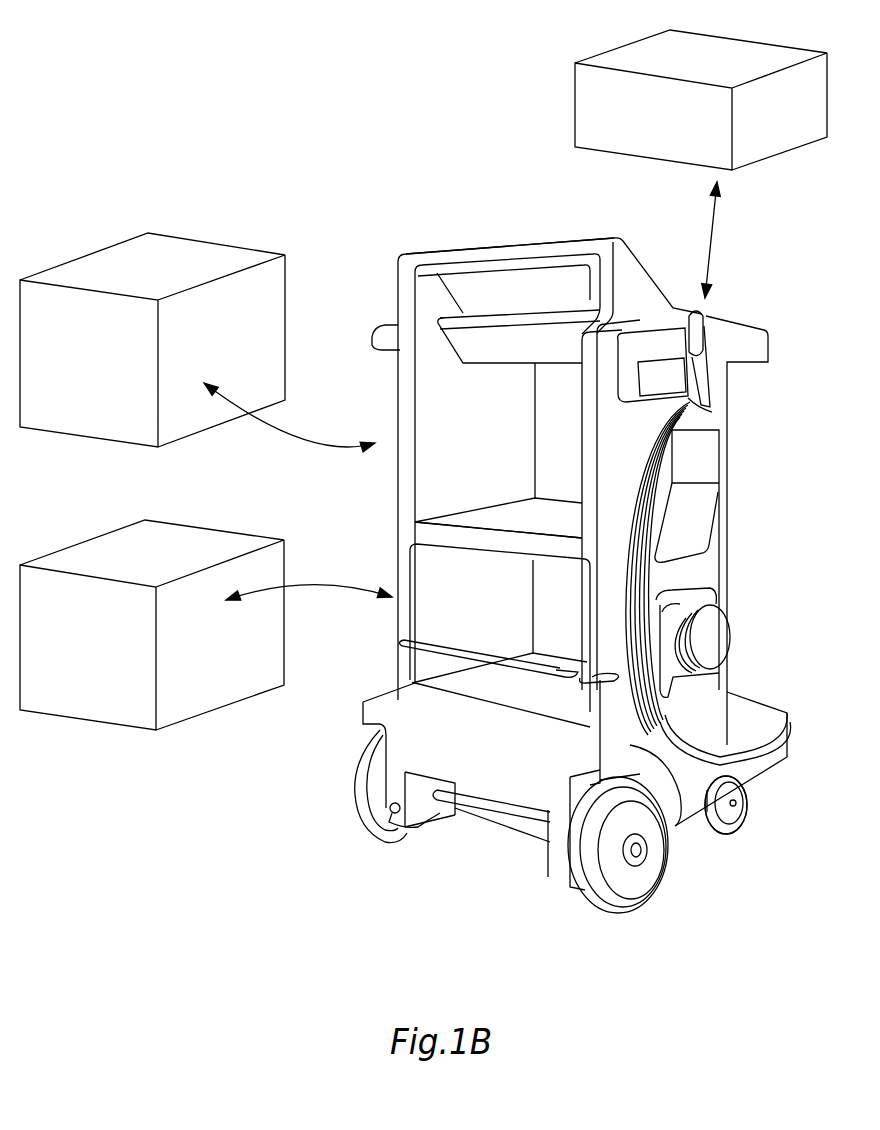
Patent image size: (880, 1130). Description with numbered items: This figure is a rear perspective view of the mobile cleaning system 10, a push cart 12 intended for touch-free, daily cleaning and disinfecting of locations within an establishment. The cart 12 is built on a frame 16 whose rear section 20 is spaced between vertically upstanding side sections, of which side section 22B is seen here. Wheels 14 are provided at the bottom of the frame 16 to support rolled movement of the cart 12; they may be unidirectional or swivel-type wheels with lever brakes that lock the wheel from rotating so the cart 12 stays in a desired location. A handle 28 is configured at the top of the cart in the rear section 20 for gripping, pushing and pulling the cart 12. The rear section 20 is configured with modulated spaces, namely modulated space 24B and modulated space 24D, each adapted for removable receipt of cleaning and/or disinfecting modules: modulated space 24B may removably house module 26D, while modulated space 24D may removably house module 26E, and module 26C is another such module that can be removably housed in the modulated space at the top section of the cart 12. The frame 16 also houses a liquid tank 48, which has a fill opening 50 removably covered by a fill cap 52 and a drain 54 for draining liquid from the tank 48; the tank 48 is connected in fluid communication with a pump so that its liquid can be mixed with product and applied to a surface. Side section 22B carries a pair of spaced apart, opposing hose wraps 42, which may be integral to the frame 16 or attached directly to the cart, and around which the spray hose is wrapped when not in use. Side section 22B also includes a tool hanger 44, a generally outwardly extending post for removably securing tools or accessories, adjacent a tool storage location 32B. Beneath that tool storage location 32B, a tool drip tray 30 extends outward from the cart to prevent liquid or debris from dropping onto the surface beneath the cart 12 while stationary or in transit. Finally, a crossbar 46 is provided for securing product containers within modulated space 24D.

The mobile cleaning system 10 is at (746, 266).
The cart 12 is at (386, 330).
The wheels 14 is at (368, 762).
The frame 16 is at (428, 816).
The rear section 20 is at (416, 534).
The side section 22B is at (720, 410).
The modulated space 24B is at (440, 410).
The modulated space 24D is at (440, 578).
The cleaning and/or disinfecting module 26C is at (645, 50).
The cleaning and/or disinfecting module 26D is at (121, 254).
The cleaning and/or disinfecting module 26E is at (120, 540).
The handle 28 is at (433, 257).
The tool drip tray 30 is at (370, 714).
The tool storage location 32B is at (708, 578).
The hose wraps 42 is at (712, 456).
The tool hanger 44 is at (706, 326).
The crossbar 46 is at (456, 648).
The liquid tank 48 is at (703, 836).
The fill opening 50 is at (718, 596).
The fill cap 52 is at (722, 636).
The drain 54 is at (368, 795).